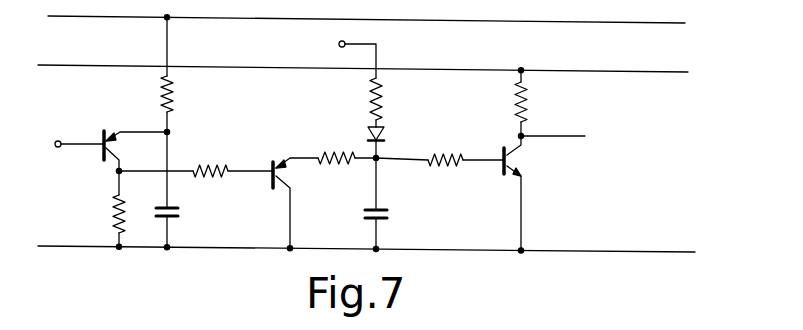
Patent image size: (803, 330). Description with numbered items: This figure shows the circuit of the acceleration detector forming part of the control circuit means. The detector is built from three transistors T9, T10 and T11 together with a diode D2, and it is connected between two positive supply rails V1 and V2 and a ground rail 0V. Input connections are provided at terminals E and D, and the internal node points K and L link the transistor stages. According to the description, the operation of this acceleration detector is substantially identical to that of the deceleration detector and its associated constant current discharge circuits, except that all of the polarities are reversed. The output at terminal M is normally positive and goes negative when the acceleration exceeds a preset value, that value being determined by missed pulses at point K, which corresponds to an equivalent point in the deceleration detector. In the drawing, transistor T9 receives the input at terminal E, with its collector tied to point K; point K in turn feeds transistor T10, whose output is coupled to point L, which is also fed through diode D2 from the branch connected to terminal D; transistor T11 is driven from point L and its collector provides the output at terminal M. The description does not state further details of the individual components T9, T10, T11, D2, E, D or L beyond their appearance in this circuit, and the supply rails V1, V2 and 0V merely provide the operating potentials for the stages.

The transistor T9 is at (124, 131).
The transistor T10 is at (283, 173).
The transistor T11 is at (527, 162).
The diode D2 is at (383, 141).
The input terminal E is at (70, 145).
The input terminal D is at (346, 57).
The point K is at (116, 172).
The node L is at (379, 161).
The terminal M is at (561, 134).
The supply voltage +V1 rail V1 is at (388, 23).
The supply voltage +V2 rail V2 is at (383, 73).
The ground 0V rail 0V is at (381, 253).